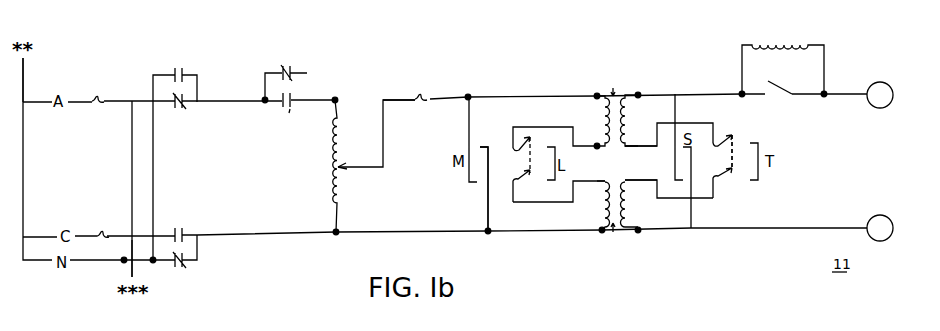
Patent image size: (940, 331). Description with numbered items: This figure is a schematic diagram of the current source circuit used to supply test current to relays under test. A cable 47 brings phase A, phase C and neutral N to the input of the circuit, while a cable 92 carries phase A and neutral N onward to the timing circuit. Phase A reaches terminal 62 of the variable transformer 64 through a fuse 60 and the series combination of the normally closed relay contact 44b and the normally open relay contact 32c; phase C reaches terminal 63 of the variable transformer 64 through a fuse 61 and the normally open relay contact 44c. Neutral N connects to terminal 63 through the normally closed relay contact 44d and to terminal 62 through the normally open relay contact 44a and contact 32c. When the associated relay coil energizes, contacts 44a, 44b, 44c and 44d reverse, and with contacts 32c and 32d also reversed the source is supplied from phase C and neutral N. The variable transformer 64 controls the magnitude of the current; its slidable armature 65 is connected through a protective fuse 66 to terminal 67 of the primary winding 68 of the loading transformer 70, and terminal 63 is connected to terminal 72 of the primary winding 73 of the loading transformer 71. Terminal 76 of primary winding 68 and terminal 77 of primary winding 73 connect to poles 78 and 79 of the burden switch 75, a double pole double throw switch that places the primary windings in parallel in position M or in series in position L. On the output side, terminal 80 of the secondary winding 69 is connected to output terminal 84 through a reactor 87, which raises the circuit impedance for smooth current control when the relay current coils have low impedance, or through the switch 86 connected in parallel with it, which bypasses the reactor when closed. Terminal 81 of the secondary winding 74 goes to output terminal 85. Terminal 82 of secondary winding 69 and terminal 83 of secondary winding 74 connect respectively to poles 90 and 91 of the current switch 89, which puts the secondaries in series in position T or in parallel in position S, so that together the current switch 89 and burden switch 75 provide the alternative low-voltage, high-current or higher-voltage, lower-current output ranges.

The cable 47 is at (23, 75).
The fuse 60 is at (97, 98).
The fuse 61 is at (100, 229).
The N.O. relay contact 44a is at (184, 67).
The N.C. relay contact 44b is at (184, 109).
The N.O. relay contact 44c is at (184, 226).
The N.C. relay contact 44d is at (185, 268).
The cable 92 is at (133, 277).
The N.O. relay contact 32c is at (276, 111).
The relay contact 32d is at (288, 65).
The terminal 62 is at (337, 99).
The terminal 63 is at (338, 231).
The variable transformer 64 is at (330, 176).
The slidable armature 65 is at (346, 167).
The fuse 66 is at (421, 95).
The terminal 67 is at (597, 93).
The primary winding 68 is at (604, 118).
The secondary winding 69 is at (627, 116).
The loading transformer 70 is at (615, 81).
The loading transformer 71 is at (614, 236).
The terminal 72 is at (601, 231).
The primary winding 73 is at (603, 213).
The secondary winding 74 is at (628, 205).
The burden switch 75 is at (498, 135).
The terminal 76 is at (597, 148).
The terminal 77 is at (604, 177).
The pole 78 is at (514, 155).
The pole 79 is at (527, 186).
The terminal 80 is at (638, 93).
The terminal 81 is at (639, 231).
The terminal 82 is at (638, 147).
The terminal 83 is at (641, 181).
The output terminal 84 is at (889, 86).
The output terminal 85 is at (893, 228).
The switch 86 is at (781, 87).
The reactor 87 is at (802, 41).
The current switch 89 is at (745, 140).
The pole 90 is at (717, 151).
The pole 91 is at (727, 183).